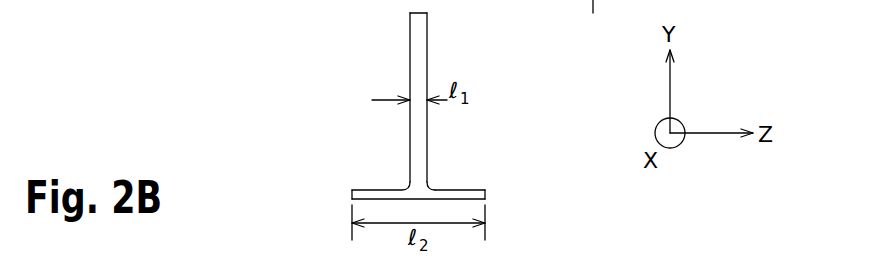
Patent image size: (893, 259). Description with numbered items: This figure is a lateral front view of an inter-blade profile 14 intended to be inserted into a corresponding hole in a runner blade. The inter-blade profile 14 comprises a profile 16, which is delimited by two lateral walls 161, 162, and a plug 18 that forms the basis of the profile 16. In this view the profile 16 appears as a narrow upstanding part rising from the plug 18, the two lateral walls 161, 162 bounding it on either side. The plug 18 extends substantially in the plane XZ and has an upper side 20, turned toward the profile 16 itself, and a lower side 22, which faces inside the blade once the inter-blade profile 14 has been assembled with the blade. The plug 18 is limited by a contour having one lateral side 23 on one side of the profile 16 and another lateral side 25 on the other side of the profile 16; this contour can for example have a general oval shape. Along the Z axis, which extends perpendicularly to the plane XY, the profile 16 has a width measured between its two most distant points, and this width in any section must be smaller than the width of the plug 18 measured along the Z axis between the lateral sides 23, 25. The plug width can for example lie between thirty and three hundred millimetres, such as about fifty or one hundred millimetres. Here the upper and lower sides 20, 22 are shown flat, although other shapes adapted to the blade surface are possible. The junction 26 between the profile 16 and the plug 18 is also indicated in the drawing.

The inter-blade profile 14 is at (328, 90).
The profile 16 is at (417, 52).
The lateral wall 161 is at (368, 97).
The lateral wall 162 is at (463, 97).
The plug 18 is at (381, 199).
The upper side 20 is at (364, 190).
The lower side 22 is at (465, 199).
The lateral side 23 is at (351, 193).
The lateral side 25 is at (487, 191).
The fillet between web and flange 26 is at (432, 187).